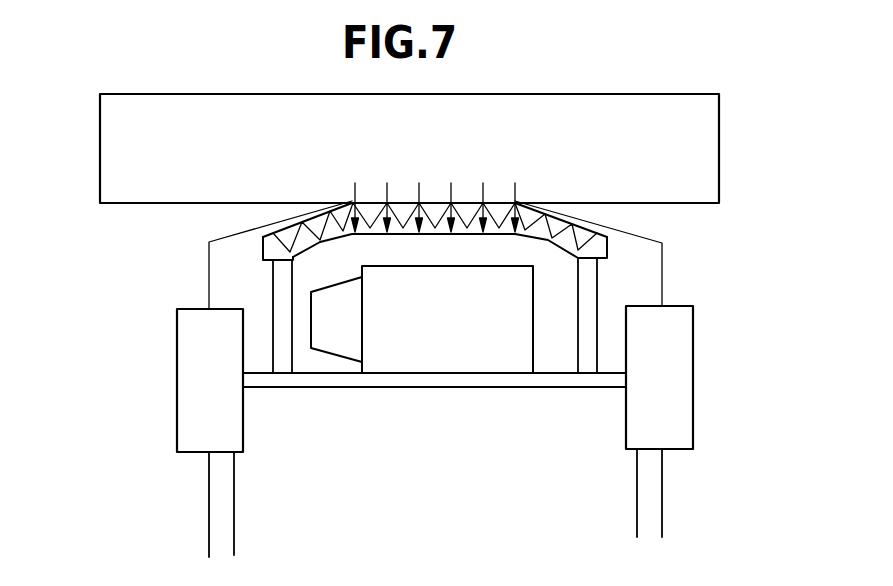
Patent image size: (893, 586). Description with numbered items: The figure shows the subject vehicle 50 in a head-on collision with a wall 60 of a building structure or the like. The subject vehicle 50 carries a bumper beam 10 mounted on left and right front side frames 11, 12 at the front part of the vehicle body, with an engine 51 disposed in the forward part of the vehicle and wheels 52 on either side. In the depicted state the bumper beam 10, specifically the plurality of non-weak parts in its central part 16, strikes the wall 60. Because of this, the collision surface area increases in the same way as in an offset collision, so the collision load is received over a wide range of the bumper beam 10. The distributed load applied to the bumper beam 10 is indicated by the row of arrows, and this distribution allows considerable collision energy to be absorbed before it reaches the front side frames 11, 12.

The wall 60 is at (115, 150).
The bumper beam 10 is at (256, 248).
The central part 16 is at (429, 235).
The left front side frame 11 is at (285, 367).
The right front side frame 12 is at (589, 364).
The engine 51 is at (494, 358).
The wheels 52 is at (187, 383).
The subject vehicle 50 is at (200, 520).